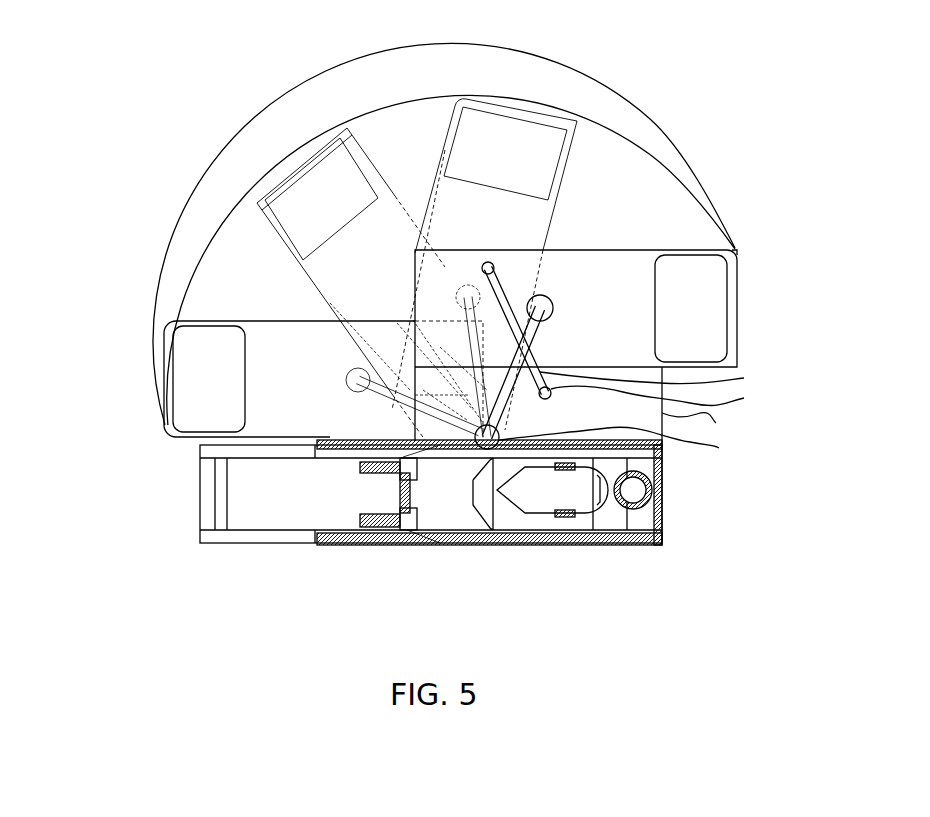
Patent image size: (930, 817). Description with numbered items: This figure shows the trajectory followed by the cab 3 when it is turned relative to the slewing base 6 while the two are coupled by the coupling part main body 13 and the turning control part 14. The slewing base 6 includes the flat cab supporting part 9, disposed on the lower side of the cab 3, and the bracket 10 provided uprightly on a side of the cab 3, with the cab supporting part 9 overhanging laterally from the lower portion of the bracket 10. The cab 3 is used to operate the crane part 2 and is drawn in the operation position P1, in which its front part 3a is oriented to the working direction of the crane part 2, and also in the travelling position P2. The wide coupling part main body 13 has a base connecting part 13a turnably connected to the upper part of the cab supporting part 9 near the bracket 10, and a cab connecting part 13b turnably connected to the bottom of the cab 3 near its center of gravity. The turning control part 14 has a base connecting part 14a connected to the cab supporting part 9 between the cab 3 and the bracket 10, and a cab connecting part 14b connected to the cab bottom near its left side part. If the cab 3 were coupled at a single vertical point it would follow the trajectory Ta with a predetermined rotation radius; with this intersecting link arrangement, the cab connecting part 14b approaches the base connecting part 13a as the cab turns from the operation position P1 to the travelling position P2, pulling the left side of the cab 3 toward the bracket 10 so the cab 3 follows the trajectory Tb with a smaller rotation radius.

The crane part 2 is at (428, 568).
The cab 3 is at (738, 304).
The front part 3a is at (669, 274).
The slewing base 6 is at (706, 477).
The cab supporting part 9 is at (696, 406).
The bracket 10 is at (347, 546).
The coupling part main body 13 is at (540, 338).
The base connecting part 13a is at (615, 443).
The cab connecting part 13b is at (548, 296).
The turning control part 14 is at (654, 377).
The base connecting part 14a is at (665, 400).
The cab connecting part 14b is at (482, 262).
The trajectory Ta is at (625, 102).
The trajectory Tb is at (652, 158).
The operation position P1 is at (749, 244).
The travelling position P2 is at (158, 430).